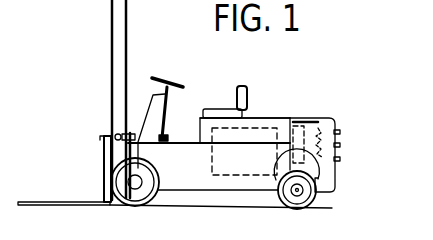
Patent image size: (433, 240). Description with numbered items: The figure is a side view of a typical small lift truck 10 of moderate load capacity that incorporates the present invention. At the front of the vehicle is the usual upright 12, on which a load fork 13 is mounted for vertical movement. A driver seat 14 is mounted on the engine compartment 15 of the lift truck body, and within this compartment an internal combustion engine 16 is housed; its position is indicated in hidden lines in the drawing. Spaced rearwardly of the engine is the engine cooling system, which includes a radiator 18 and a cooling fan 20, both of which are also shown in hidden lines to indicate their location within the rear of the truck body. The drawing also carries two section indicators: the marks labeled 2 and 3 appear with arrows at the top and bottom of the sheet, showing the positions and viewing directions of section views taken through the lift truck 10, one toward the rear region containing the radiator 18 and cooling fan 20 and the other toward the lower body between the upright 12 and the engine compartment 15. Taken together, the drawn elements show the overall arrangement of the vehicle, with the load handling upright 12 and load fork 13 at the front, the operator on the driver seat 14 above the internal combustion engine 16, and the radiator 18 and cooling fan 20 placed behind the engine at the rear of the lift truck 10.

The lift truck 10 is at (329, 108).
The upright 12 is at (111, 60).
The load fork 13 is at (80, 202).
The driver seat 14 is at (212, 108).
The engine compartment 15 is at (268, 114).
The internal combustion engine 16 is at (242, 176).
The radiator 18 is at (313, 115).
The cooling fan 20 is at (322, 128).
The section line for FIG. 2 is at (307, 100).
The section line for FIG. 3 is at (201, 217).